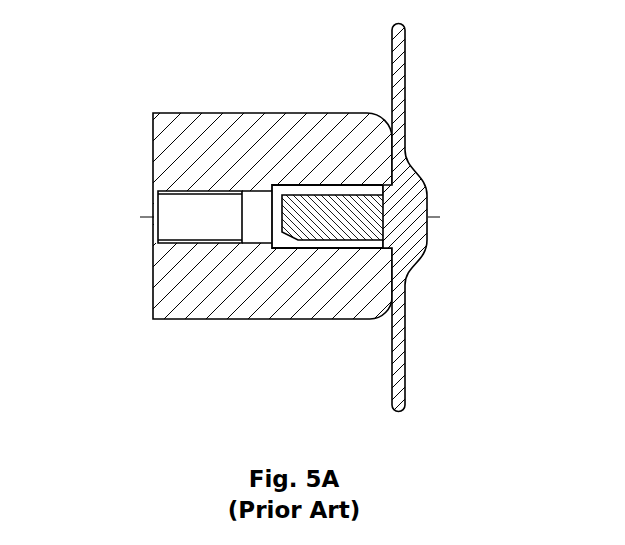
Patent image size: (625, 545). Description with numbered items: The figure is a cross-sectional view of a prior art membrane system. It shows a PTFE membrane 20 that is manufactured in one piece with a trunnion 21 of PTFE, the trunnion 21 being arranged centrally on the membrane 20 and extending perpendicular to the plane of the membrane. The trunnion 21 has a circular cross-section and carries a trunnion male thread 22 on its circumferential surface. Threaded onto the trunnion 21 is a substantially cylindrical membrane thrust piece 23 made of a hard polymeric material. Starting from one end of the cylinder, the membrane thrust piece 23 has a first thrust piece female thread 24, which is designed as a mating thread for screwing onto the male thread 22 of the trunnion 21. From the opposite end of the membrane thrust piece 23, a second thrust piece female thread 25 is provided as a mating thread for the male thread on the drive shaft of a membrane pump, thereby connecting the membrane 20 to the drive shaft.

The PTFE membrane 20 is at (405, 88).
The trunnion 21 is at (332, 186).
The trunnion male thread 22 is at (332, 249).
The membrane thrust piece 23 is at (197, 302).
The first thrust piece female thread 24 is at (304, 188).
The second thrust piece female thread 25 is at (193, 195).